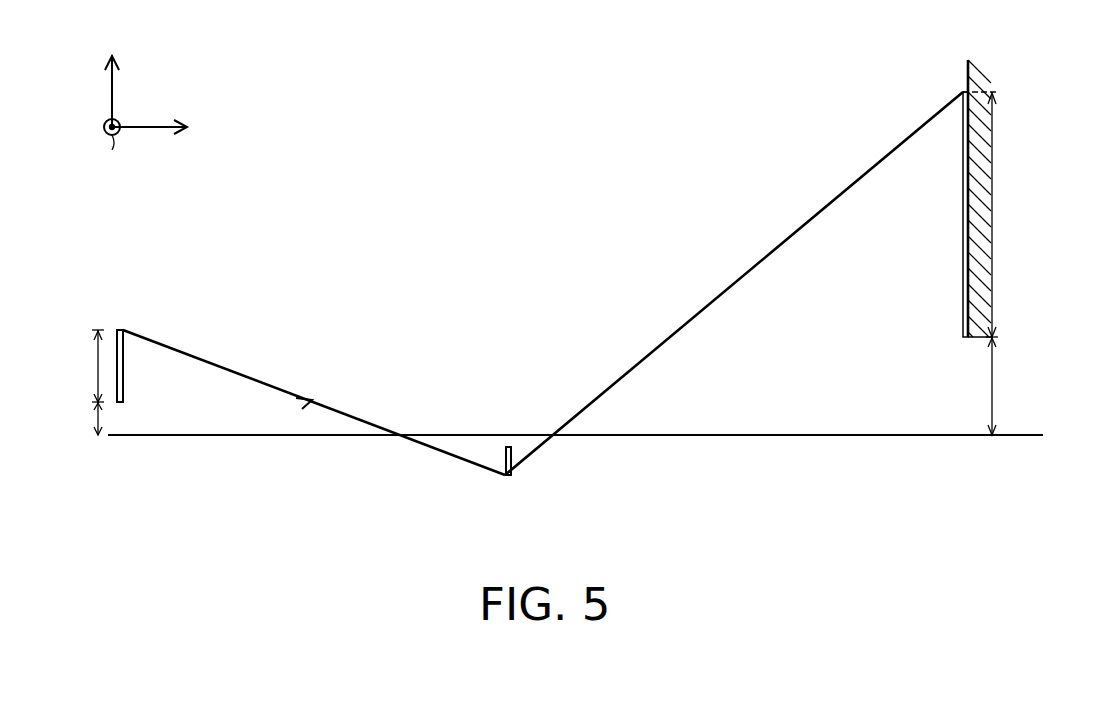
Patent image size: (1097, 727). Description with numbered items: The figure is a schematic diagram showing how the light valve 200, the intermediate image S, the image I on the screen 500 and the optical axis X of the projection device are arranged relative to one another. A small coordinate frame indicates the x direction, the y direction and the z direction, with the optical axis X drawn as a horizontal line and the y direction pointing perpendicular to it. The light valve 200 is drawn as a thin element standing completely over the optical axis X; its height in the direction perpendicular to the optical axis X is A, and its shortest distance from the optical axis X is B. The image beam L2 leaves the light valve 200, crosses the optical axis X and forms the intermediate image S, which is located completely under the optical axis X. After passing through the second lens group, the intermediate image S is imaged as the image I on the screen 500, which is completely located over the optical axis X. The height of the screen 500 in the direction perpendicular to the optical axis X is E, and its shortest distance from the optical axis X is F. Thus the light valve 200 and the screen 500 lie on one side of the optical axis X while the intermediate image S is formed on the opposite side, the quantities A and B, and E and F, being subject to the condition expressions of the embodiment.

The light valve 200 is at (121, 328).
The screen 500 is at (967, 60).
The image beam L2 is at (212, 360).
The intermediate image S is at (512, 458).
The image I is at (962, 97).
The height of the light valve A is at (90, 366).
The shortest distance of the light valve from the optical axis B is at (90, 418).
The height of the screen E is at (999, 214).
The shortest distance of the screen from the optical axis F is at (998, 386).
The optical axis X is at (1034, 437).
The x direction x is at (157, 127).
The y direction y is at (112, 72).
The z direction z is at (112, 145).